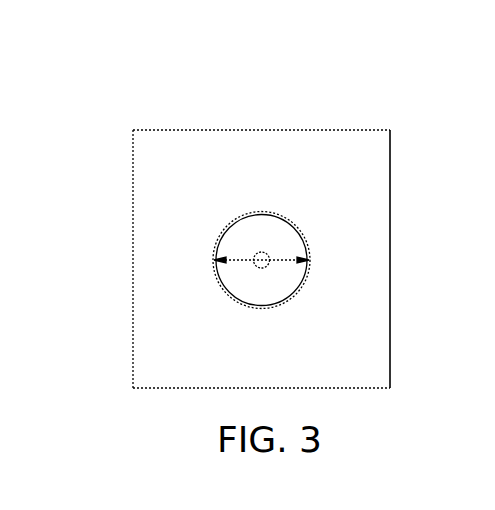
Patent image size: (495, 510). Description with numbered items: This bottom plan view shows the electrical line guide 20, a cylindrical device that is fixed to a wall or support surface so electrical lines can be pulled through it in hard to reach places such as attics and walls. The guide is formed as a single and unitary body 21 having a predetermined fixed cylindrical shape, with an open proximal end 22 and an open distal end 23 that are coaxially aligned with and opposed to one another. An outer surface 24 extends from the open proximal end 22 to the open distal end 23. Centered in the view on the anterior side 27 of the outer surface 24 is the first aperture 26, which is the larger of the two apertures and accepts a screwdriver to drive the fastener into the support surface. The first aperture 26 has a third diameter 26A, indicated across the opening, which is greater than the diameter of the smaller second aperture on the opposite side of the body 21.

The electrical line guide 20 is at (89, 108).
The single and unitary body 21 is at (290, 165).
The open proximal end 22 is at (337, 130).
The open distal end 23 is at (187, 388).
The outer surface 24 is at (170, 230).
The anterior side 27 is at (360, 215).
The first aperture 26 is at (288, 275).
The third diameter 26A is at (256, 255).